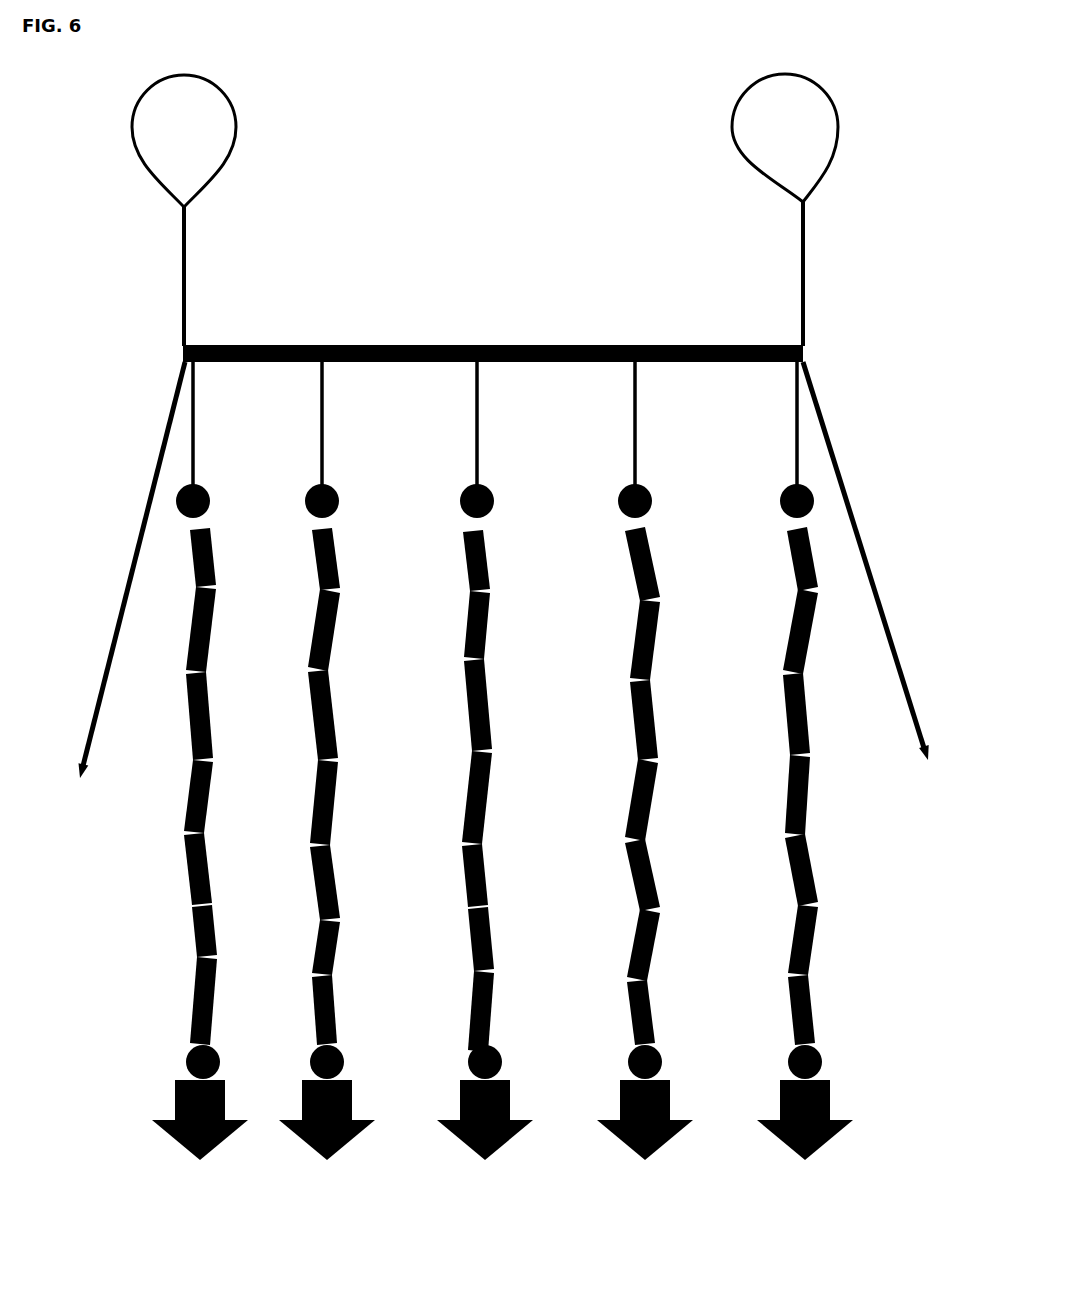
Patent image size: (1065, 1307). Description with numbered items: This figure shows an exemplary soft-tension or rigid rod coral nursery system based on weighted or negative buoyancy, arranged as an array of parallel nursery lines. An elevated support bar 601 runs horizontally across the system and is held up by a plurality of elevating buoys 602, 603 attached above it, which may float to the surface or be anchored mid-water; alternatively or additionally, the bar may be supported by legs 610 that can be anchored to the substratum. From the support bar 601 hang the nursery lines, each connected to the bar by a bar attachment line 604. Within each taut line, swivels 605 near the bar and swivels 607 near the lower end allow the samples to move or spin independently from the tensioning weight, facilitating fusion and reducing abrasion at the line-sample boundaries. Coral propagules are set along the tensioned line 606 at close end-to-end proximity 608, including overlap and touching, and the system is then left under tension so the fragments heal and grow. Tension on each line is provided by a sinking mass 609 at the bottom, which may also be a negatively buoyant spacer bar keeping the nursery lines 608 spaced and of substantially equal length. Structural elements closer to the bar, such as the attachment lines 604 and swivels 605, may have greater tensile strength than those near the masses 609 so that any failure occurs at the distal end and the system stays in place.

The support bar 601 is at (450, 335).
The elevating buoy 602 is at (238, 142).
The elevating buoy 603 is at (807, 265).
The bar attachment line 604 is at (308, 443).
The swivel 605 is at (172, 495).
The tensioned line 606 is at (187, 813).
The swivel 607 is at (183, 1058).
The nursery line 608 is at (802, 653).
The sinking mass 609 is at (840, 1112).
The leg 610 is at (858, 512).